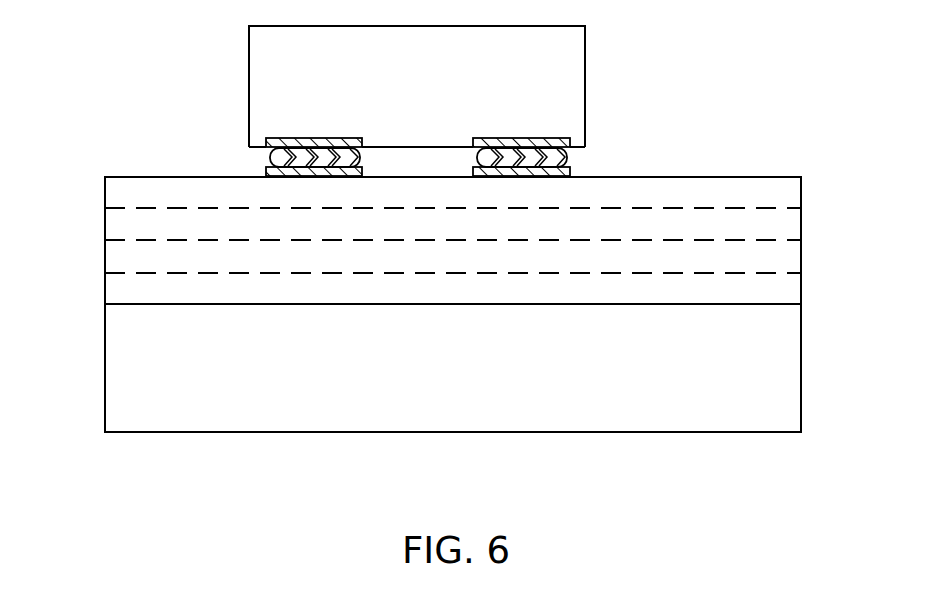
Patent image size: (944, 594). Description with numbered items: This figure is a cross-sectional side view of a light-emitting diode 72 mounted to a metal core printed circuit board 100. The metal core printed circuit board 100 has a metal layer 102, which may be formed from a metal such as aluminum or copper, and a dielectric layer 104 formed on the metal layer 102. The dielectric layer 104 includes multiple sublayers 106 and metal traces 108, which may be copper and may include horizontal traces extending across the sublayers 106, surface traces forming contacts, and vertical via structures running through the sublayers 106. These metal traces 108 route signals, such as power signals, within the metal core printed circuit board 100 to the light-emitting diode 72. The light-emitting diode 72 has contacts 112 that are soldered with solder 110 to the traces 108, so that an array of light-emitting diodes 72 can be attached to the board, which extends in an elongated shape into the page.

The light-emitting diode 72 is at (587, 86).
The metal core printed circuit board 100 is at (80, 173).
The metal layer 102 is at (819, 305).
The dielectric layer 104 is at (819, 177).
The sublayers 106 is at (748, 228).
The metal traces 108 is at (567, 170).
The solder 110 is at (270, 152).
The contacts 112 is at (330, 138).